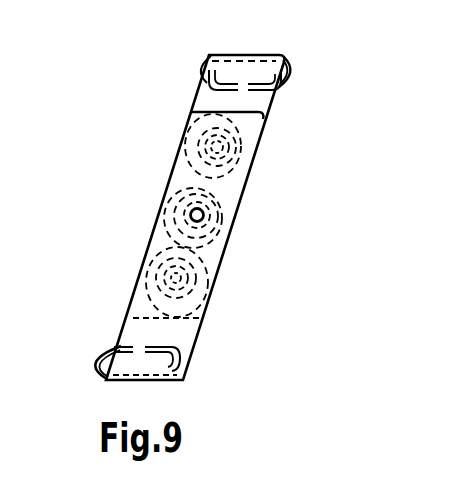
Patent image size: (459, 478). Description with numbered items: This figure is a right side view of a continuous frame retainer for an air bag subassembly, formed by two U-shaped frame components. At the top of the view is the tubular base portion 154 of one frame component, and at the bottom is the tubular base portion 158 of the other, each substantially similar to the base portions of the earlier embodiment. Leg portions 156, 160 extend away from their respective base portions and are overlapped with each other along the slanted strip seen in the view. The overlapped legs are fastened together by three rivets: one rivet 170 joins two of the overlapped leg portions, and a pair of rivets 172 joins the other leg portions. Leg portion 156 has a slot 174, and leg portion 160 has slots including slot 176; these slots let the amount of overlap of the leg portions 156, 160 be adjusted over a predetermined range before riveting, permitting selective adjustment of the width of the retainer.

The tubular base portion 154 is at (298, 57).
The leg portion 156 is at (188, 76).
The tubular base portion 158 is at (85, 378).
The leg portion 160 is at (185, 340).
The rivet 170 is at (207, 220).
The rivets 172 is at (222, 147).
The slot 174 is at (217, 202).
The slot 176 is at (237, 131).